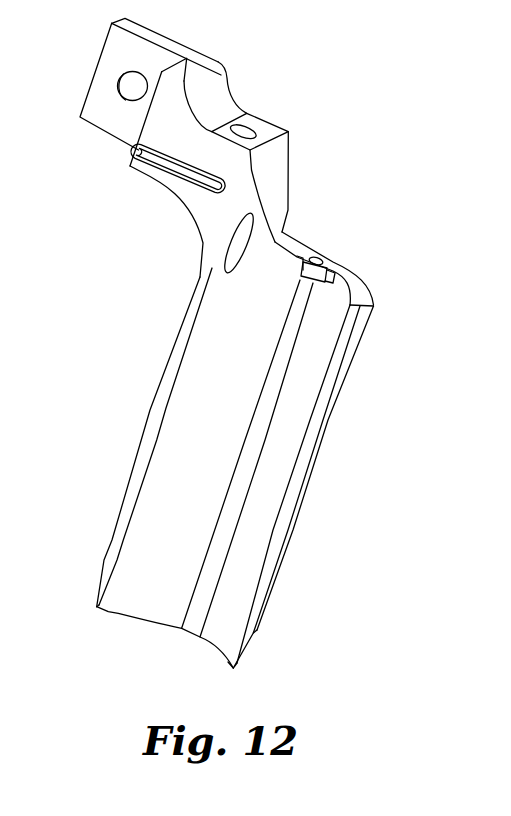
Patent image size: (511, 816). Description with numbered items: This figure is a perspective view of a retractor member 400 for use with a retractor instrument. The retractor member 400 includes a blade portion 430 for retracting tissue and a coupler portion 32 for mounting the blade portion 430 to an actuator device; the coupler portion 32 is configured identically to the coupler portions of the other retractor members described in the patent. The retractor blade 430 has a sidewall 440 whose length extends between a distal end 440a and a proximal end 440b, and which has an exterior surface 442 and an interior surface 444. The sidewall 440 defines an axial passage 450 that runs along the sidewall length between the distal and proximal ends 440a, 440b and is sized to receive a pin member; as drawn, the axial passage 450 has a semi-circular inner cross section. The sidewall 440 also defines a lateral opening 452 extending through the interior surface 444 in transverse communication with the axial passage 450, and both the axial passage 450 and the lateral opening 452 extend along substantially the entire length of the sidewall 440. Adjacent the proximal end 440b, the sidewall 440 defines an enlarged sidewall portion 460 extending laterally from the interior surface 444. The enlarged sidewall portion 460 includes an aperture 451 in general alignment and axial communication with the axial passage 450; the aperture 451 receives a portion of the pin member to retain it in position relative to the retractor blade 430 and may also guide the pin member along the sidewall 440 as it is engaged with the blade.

The retractor member 400 is at (342, 127).
The coupler portion 32 is at (119, 166).
The blade portion 430 is at (340, 491).
The sidewall 440 is at (150, 418).
The distal end 440a is at (150, 634).
The proximal end 440b is at (390, 305).
The exterior surface 442 is at (335, 428).
The interior surface 444 is at (252, 535).
The axial passage 450 is at (272, 346).
The aperture 451 is at (322, 258).
The lateral opening 452 is at (224, 514).
The enlarged sidewall portion 460 is at (296, 271).